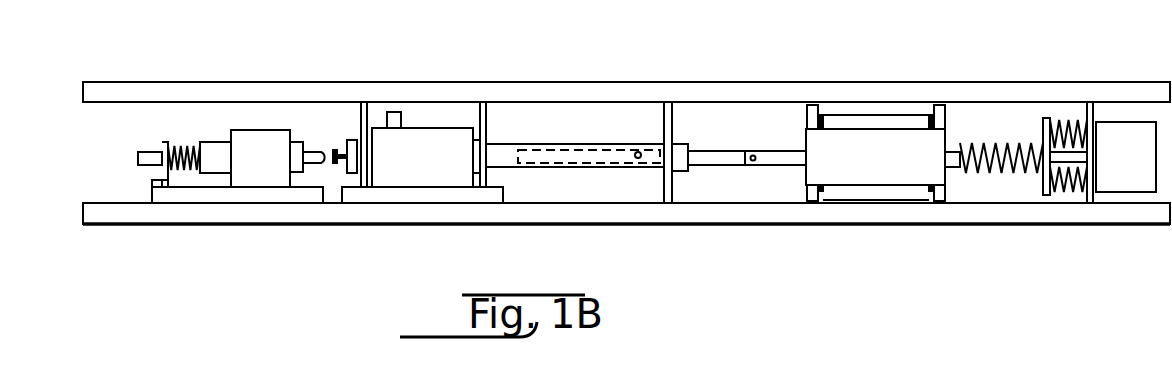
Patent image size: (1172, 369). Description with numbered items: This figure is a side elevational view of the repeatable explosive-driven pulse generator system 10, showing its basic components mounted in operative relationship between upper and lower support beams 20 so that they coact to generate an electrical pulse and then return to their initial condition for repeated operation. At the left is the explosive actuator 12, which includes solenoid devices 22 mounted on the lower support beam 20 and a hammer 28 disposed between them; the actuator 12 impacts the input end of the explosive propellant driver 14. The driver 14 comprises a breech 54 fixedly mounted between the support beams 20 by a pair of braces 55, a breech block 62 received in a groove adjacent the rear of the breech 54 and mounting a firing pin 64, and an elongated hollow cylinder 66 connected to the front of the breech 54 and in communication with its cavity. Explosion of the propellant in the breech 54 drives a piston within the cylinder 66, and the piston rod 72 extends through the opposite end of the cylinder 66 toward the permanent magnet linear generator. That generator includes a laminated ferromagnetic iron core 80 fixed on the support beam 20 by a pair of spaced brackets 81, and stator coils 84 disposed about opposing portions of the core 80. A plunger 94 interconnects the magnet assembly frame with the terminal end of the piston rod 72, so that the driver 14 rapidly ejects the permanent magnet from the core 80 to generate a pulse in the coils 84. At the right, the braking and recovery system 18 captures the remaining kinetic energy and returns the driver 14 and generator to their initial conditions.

The repeatable explosive-driven pulse generator system 10 is at (750, 66).
The explosive actuator 12 is at (226, 107).
The explosive propellant driver 14 is at (508, 128).
The braking and recovery system 18 is at (1065, 117).
The support beams 20 is at (387, 92).
The solenoid devices 22 is at (258, 133).
The hammer 28 is at (316, 150).
The breech 54 is at (443, 105).
The braces 55 is at (362, 120).
The breech block 62 is at (400, 118).
The firing pin 64 is at (335, 148).
The cylinder 66 is at (577, 143).
The piston rod 72 is at (716, 150).
The laminated ferromagnetic iron core 80 is at (876, 153).
The brackets 81 is at (807, 190).
The stator coils 84 is at (938, 142).
The plunger 94 is at (772, 150).